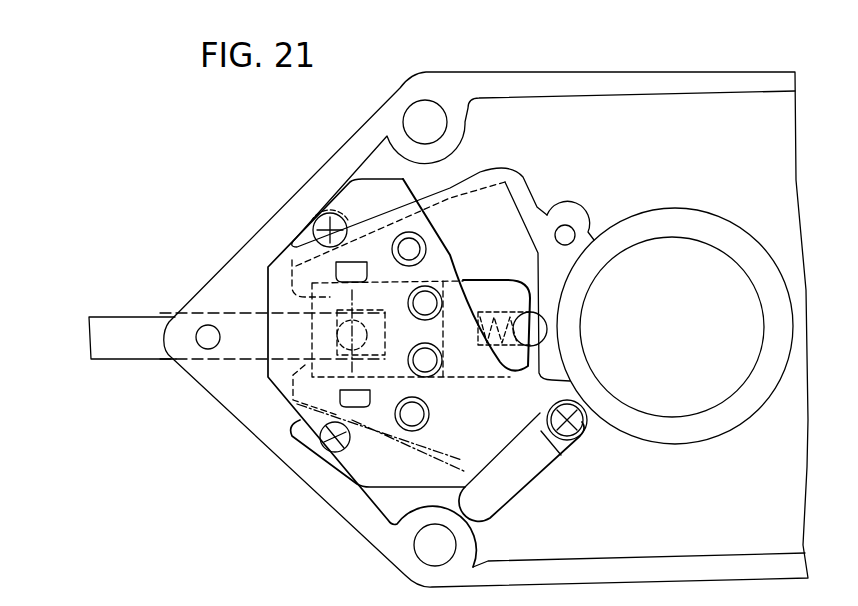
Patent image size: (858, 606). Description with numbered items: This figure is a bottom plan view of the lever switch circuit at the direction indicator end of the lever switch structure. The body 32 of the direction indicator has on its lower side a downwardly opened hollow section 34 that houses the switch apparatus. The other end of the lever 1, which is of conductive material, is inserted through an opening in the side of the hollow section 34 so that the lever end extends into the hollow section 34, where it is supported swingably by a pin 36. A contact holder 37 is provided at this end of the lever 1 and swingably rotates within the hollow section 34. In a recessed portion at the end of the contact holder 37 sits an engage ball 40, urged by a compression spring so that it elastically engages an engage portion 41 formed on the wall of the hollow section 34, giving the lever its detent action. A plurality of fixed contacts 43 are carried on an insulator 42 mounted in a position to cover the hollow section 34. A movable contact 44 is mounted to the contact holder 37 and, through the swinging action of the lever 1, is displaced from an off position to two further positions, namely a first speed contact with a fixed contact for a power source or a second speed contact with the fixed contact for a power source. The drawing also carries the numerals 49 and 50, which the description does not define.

The lever 1 is at (111, 352).
The body 32 is at (575, 103).
The hollow section 34 is at (503, 200).
The pin 36 is at (206, 350).
The contact holder 37 is at (490, 277).
The engage ball 40 is at (547, 330).
The engage portion 41 is at (533, 285).
The insulator 42 is at (437, 230).
The fixed contacts 43 is at (407, 418).
The movable contact 44 is at (443, 335).
The slide member 49 is at (345, 338).
The screw 50 is at (335, 300).